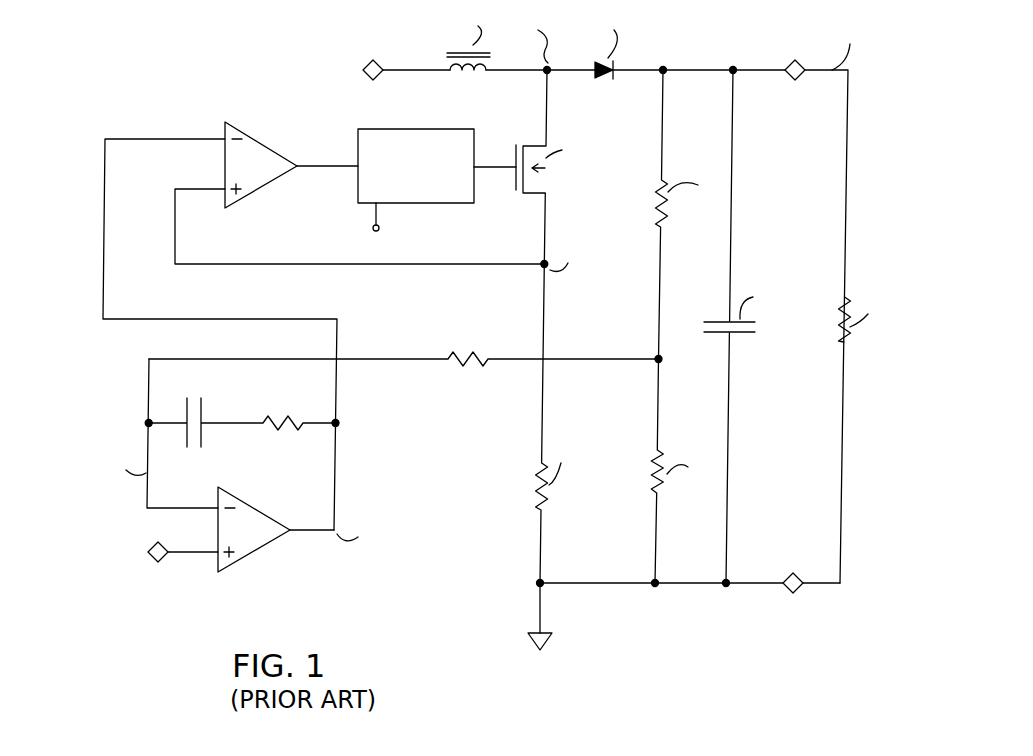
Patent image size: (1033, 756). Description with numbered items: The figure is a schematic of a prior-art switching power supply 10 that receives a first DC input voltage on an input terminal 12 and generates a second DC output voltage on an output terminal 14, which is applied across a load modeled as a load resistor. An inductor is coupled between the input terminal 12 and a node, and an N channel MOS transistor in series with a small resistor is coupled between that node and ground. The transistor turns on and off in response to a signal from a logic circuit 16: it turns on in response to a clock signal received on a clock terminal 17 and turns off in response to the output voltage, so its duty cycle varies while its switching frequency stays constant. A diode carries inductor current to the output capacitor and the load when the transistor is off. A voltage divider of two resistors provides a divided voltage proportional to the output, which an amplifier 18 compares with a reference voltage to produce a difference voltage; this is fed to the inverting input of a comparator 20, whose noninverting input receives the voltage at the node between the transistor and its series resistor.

The power supply 10 is at (289, 69).
The input terminal 12 is at (392, 72).
The output terminal 14 is at (787, 63).
The logic circuit 16 is at (427, 203).
The clock terminal 17 is at (373, 226).
The amplifier 18 is at (264, 512).
The comparator 20 is at (257, 137).